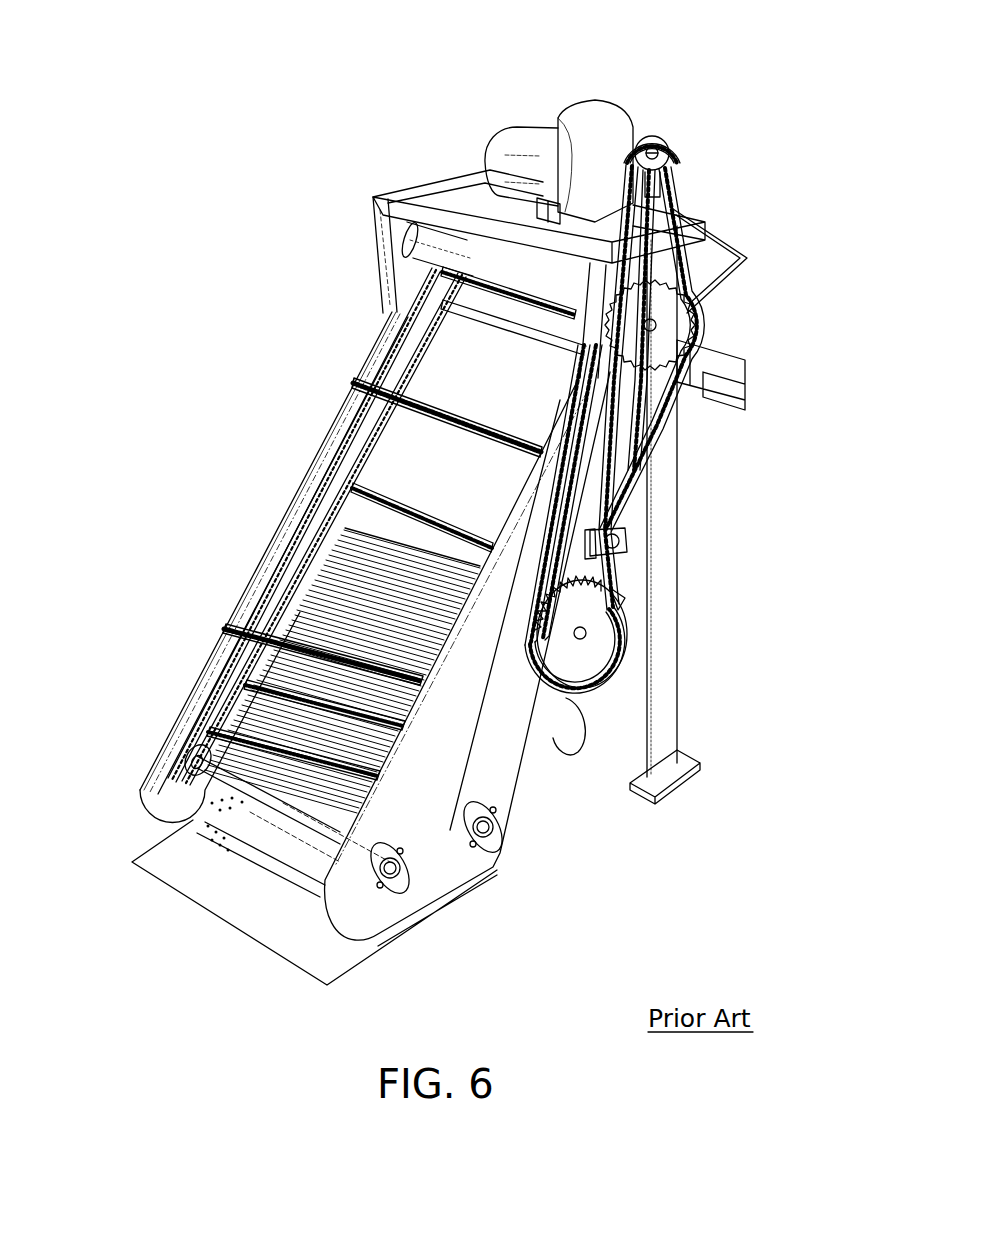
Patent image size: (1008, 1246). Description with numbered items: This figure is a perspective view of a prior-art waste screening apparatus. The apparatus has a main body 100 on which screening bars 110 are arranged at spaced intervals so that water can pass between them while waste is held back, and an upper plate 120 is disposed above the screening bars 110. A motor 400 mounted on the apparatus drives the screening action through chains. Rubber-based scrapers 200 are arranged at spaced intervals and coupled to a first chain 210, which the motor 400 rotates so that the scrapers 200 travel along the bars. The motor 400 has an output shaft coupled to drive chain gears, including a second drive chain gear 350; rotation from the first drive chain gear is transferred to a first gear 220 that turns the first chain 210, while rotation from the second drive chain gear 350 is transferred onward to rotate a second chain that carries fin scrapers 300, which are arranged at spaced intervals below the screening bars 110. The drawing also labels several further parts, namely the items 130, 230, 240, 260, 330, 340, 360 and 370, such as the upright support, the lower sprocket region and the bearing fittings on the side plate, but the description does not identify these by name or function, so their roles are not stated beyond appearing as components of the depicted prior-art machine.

The main body 100 is at (372, 517).
The screening bars 110 is at (250, 747).
The upper plate 120 is at (420, 430).
The side plate 130 is at (690, 235).
The rubber-based scrapers 200 is at (360, 377).
The first chain 210 is at (225, 648).
The first gear 220 is at (395, 250).
The upper frame 230 is at (403, 198).
The bracket 240 is at (700, 280).
The bearing 260 is at (405, 865).
The fin scrapers 300 is at (340, 620).
The drive sprocket 330 is at (600, 627).
The support post 340 is at (615, 467).
The second drive chain gear 350 is at (672, 150).
The chain tensioner 360 is at (625, 540).
The bearing 370 is at (497, 820).
The motor 400 is at (560, 107).